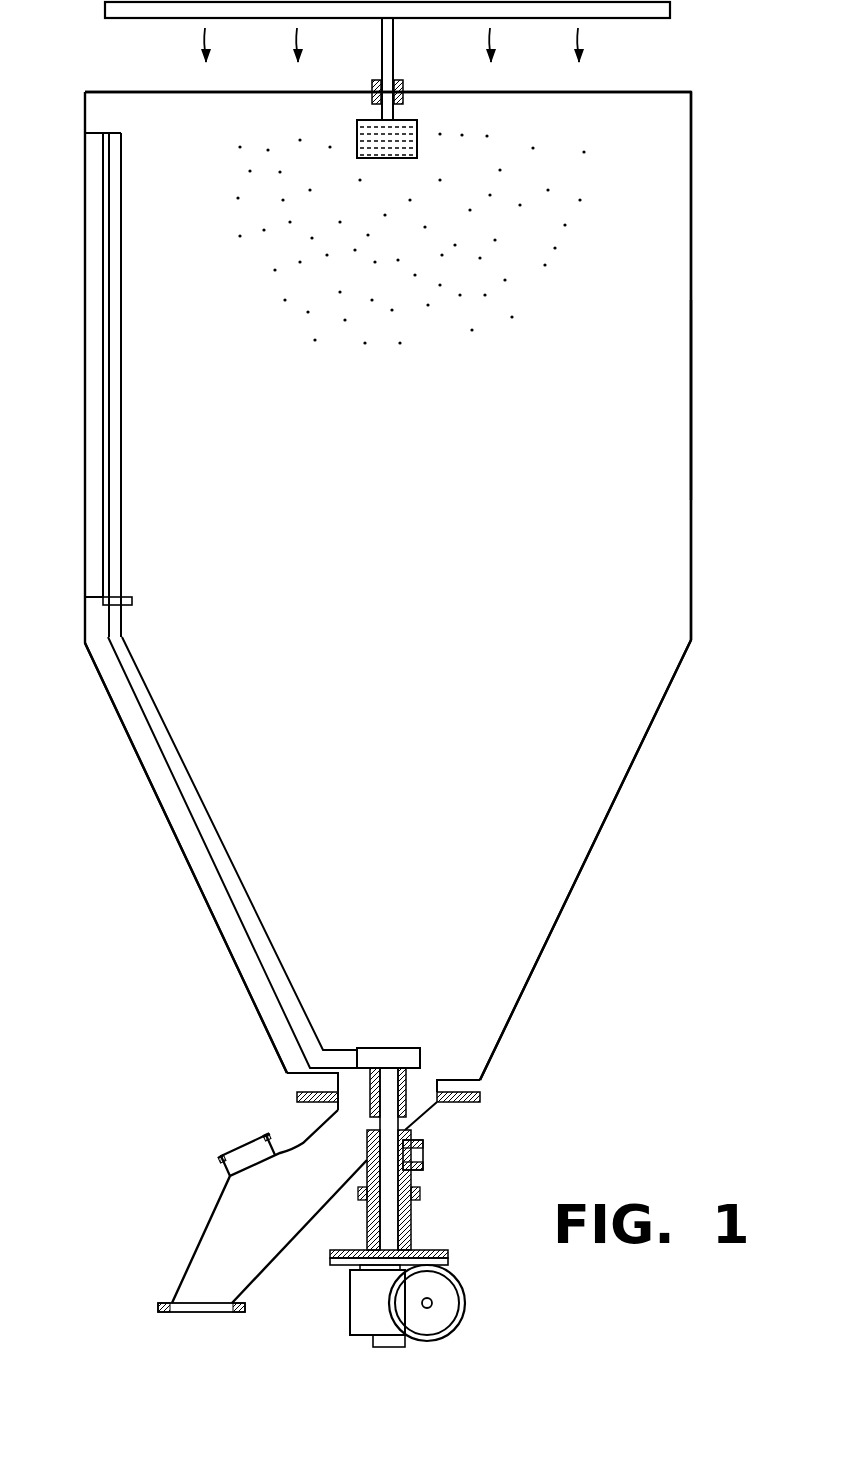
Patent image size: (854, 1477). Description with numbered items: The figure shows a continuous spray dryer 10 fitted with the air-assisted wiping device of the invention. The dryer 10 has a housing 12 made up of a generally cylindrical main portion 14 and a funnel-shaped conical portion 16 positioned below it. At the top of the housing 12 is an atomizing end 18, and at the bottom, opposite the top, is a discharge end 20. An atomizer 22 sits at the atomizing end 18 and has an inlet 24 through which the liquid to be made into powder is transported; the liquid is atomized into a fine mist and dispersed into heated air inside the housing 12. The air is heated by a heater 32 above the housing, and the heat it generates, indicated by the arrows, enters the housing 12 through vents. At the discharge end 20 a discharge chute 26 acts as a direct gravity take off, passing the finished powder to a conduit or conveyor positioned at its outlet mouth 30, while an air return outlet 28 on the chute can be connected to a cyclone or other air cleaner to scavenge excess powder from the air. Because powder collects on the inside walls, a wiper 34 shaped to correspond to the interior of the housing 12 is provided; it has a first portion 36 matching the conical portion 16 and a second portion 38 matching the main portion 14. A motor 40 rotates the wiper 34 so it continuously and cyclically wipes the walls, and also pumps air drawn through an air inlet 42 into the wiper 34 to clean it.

The continuous spray dryer 10 is at (737, 228).
The housing 12 is at (693, 545).
The main portion 14 is at (690, 425).
The conical portion 16 is at (611, 813).
The atomizing end 18 is at (664, 92).
The discharge end 20 is at (482, 1097).
The atomizer 22 is at (432, 138).
The inlet 24 is at (393, 64).
The discharge chute 26 is at (285, 1215).
The air return outlet 28 is at (250, 1146).
The outlet mouth 30 is at (205, 1300).
The heater 32 is at (105, 10).
The wiper 34 is at (162, 508).
The first portion 36 is at (226, 815).
The second portion 38 is at (135, 330).
The motor 40 is at (478, 1299).
The air inlet 42 is at (425, 1160).